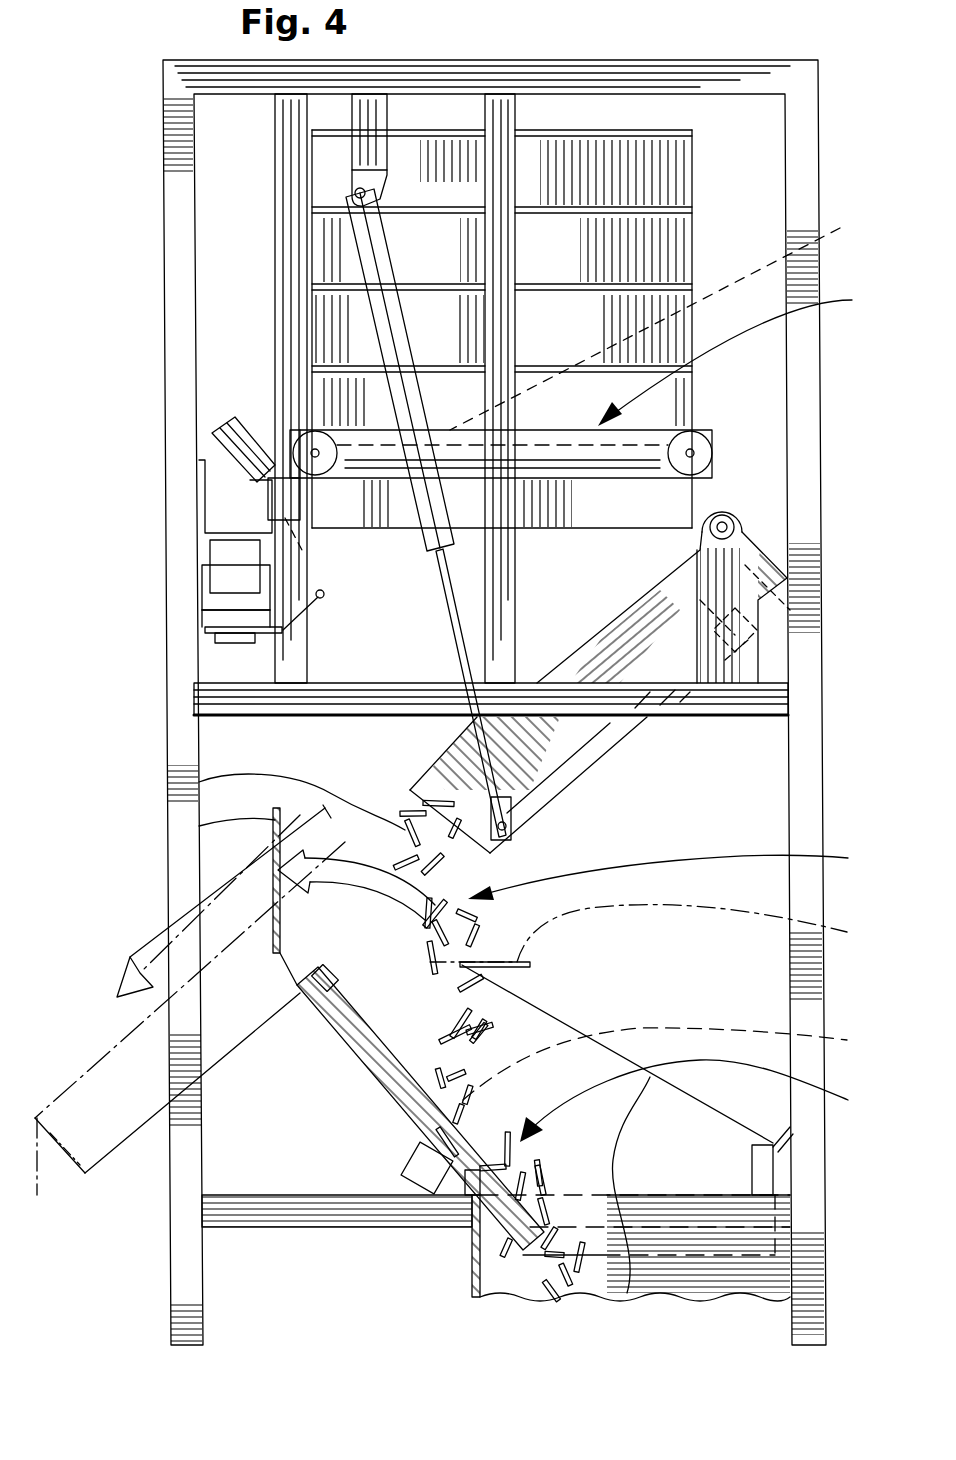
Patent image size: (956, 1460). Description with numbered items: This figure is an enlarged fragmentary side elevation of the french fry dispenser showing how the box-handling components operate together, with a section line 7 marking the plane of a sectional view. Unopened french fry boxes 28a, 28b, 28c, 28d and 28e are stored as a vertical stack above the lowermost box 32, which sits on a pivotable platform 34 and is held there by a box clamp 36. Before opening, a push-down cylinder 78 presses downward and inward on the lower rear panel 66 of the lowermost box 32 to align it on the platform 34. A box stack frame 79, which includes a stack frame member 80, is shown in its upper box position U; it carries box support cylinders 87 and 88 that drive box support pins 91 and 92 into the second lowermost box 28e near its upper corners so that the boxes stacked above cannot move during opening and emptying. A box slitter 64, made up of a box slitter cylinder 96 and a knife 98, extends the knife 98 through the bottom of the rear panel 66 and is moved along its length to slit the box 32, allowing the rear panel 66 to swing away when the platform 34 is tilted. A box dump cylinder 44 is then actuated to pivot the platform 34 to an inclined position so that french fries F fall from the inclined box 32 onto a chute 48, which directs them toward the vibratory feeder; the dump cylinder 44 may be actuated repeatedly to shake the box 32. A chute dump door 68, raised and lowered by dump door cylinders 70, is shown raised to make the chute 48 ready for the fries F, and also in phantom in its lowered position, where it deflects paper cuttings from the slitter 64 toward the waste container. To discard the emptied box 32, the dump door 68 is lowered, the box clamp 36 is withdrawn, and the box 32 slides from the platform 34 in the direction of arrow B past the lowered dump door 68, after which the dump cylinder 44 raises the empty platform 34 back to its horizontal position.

The section line of FIG. 7 is at (165, 27).
The french fry box 28a is at (325, 178).
The french fry box 28b is at (325, 245).
The french fry box 28c is at (330, 316).
The french fry box 28d is at (330, 386).
The second lowermost box 28e is at (680, 500).
The box dump cylinder 44 is at (360, 253).
The push-down cylinder 78 is at (215, 440).
The box stack frame 79 is at (741, 357).
The stack frame member 80 is at (715, 437).
The box support cylinder 87 is at (285, 452).
The box support cylinder 88 is at (692, 455).
The box support pin 91 is at (325, 490).
The box support pin 92 is at (700, 468).
The box slitter 64 is at (180, 573).
The box slitter cylinder 96 is at (213, 617).
The knife 98 is at (320, 600).
The lowermost box 32 is at (673, 597).
The pivotable platform 34 is at (610, 745).
The box clamp 36 is at (745, 618).
The chute 48 is at (338, 1190).
The lower rear panel 66 is at (172, 792).
The chute dump door 68 is at (265, 825).
The dump door cylinder 70 is at (674, 1062).
The upper box position U is at (662, 320).
The arrow B is at (165, 935).
The french fries F is at (573, 993).